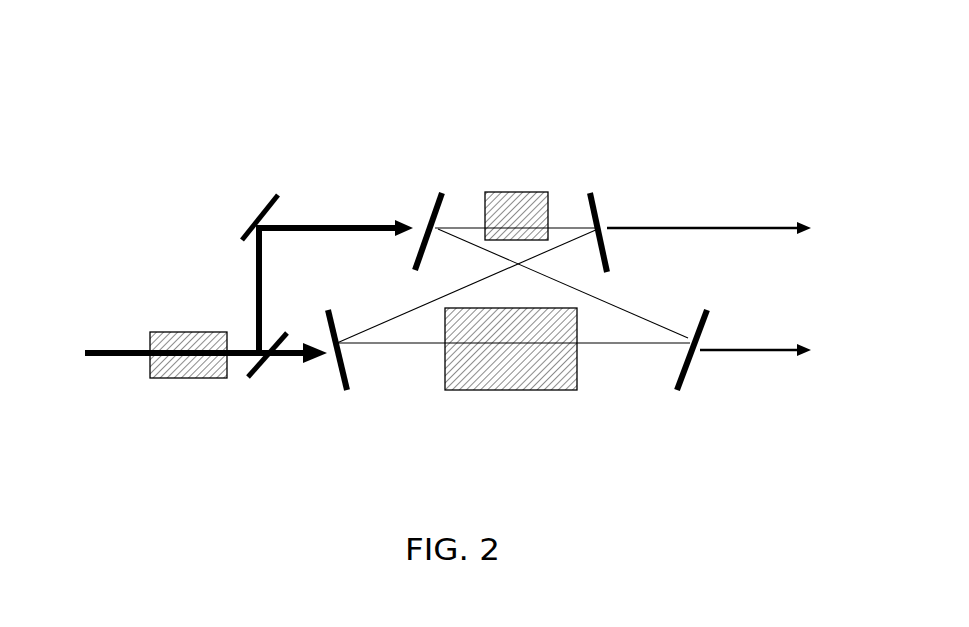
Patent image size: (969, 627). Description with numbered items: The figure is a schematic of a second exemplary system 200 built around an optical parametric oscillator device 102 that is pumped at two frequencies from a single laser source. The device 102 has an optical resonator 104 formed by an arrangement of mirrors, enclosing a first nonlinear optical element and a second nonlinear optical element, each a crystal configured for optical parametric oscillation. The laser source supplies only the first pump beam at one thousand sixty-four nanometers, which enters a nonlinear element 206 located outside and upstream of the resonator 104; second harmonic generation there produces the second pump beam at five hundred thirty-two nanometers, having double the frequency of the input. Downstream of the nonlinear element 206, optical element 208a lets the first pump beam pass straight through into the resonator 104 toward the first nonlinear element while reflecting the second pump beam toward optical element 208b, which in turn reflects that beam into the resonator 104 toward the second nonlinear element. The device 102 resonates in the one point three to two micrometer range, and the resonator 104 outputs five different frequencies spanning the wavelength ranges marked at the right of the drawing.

The second exemplary system 200 is at (142, 78).
The optical parametric oscillator (OPO) device 102 is at (567, 137).
The optical resonator 104 is at (440, 407).
The nonlinear element 206 is at (155, 315).
The optical element 208a is at (240, 400).
The optical element 208b is at (243, 212).